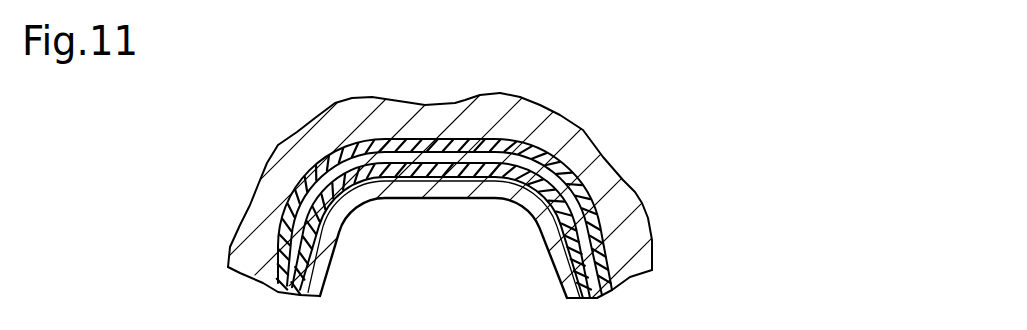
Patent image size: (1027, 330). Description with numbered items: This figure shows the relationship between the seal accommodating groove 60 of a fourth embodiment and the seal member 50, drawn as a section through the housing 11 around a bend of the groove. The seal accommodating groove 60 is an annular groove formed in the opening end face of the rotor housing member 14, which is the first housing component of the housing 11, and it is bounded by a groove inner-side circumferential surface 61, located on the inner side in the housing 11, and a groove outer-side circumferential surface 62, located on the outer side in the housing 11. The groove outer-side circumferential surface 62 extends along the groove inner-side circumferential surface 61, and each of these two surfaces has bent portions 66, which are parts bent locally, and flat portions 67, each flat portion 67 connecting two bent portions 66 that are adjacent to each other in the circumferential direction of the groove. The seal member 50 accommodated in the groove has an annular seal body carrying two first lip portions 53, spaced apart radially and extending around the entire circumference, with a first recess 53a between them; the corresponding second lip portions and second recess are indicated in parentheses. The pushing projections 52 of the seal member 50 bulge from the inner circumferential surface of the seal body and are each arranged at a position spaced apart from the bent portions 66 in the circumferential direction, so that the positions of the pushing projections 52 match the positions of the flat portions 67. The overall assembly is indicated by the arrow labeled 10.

The secondary battery / electrode assembly 10 is at (427, 174).
The housing 11 is at (228, 264).
The rotor housing member 14 is at (630, 199).
The seal member 50 is at (305, 180).
The pushing projections 52 is at (310, 245).
The first lip portions 53 is at (437, 166).
The first recess 53a is at (440, 168).
The seal accommodating groove 60 is at (422, 166).
The groove inner-side circumferential surface 61 is at (493, 178).
The groove outer-side circumferential surface 62 is at (525, 147).
The bent portions 66 is at (355, 157).
The flat portions 67 is at (436, 152).